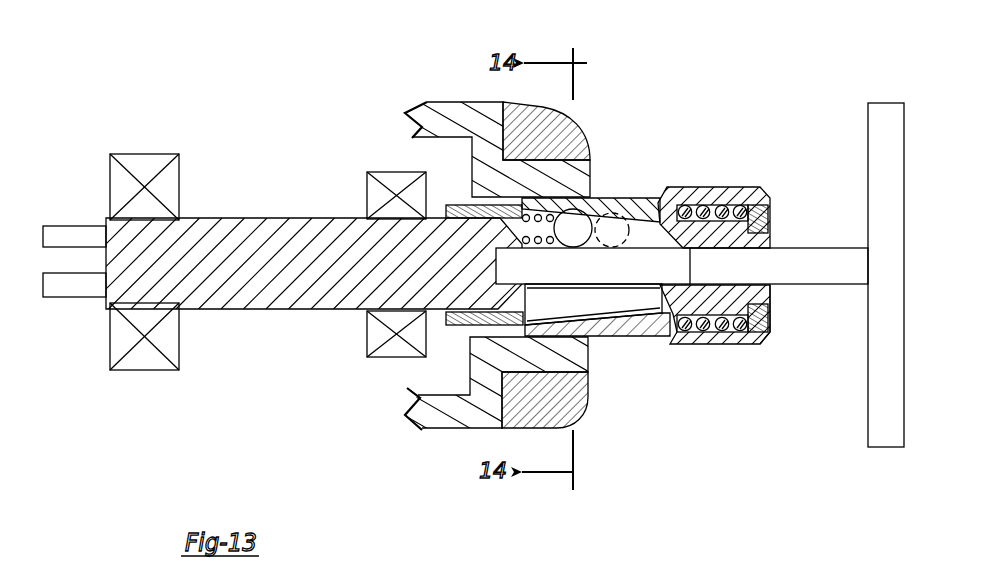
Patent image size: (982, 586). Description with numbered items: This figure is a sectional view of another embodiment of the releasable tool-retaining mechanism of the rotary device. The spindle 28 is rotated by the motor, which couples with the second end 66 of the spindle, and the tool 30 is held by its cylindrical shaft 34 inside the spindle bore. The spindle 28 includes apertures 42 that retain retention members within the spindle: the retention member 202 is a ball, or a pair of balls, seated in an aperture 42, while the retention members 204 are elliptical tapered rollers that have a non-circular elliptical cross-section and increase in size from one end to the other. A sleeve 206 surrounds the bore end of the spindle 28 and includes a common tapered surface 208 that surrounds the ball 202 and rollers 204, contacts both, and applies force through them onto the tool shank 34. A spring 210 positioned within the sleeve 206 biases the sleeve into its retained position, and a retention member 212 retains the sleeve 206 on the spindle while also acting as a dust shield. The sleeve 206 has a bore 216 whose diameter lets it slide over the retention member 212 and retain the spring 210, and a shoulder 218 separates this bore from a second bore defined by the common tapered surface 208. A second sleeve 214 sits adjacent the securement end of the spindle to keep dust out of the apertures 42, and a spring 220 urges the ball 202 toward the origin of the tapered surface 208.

The spindle 28 is at (259, 242).
The tool 30 is at (868, 96).
The shaft 34 is at (810, 258).
The apertures 42 is at (683, 245).
The second end 66 is at (72, 237).
The retention member 202 is at (578, 215).
The retention members 204 is at (603, 302).
The sleeve 206 is at (685, 345).
The common tapered surface 208 is at (553, 212).
The spring 210 is at (740, 187).
The retention member 212 is at (768, 312).
The sleeve 214 is at (450, 326).
The bore 216 is at (729, 346).
The shoulder 218 is at (665, 336).
The spring 220 is at (525, 212).